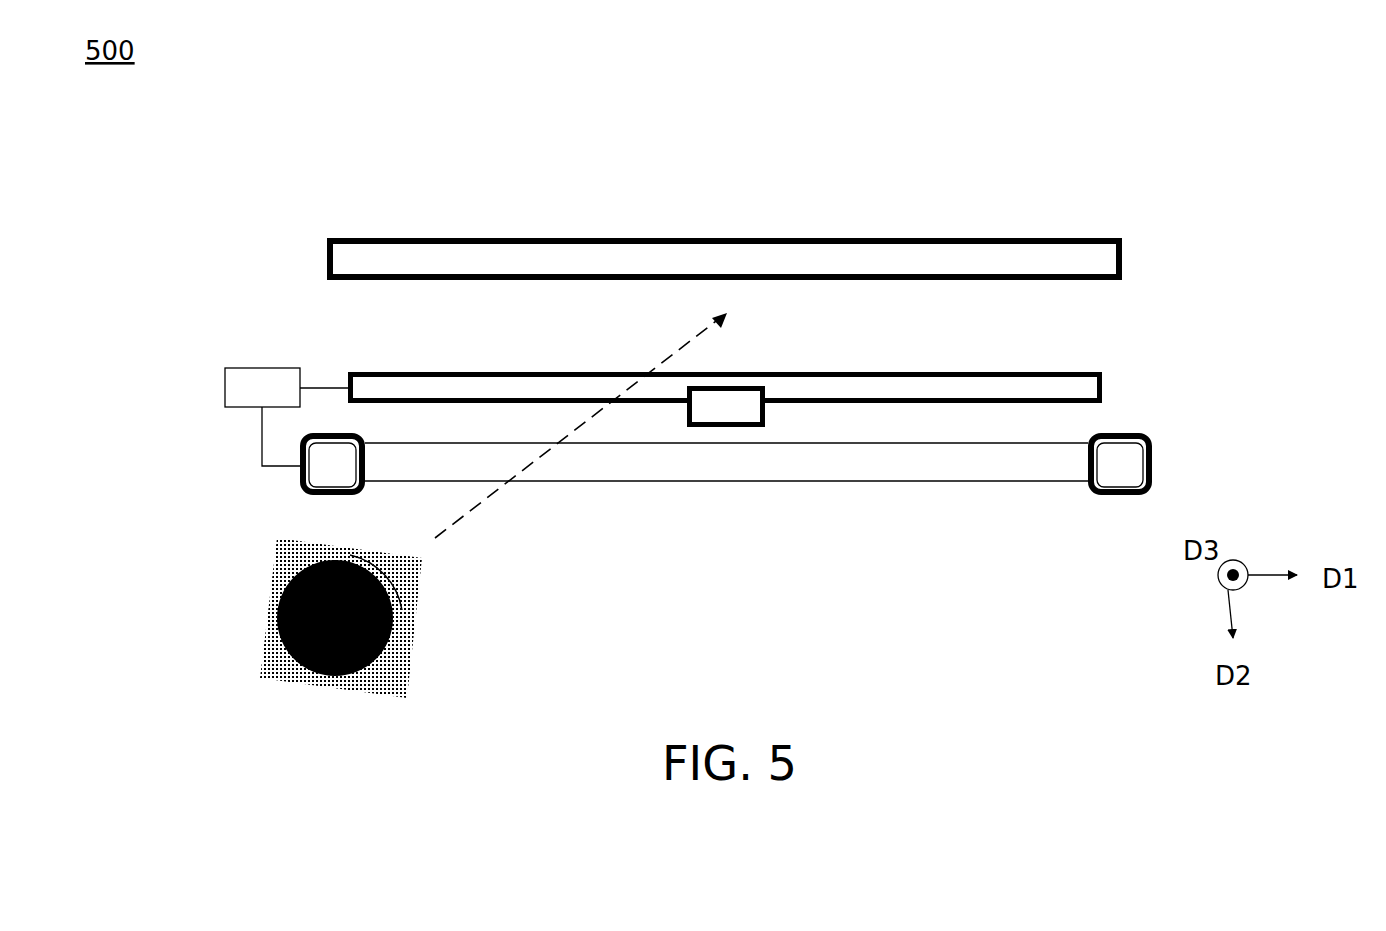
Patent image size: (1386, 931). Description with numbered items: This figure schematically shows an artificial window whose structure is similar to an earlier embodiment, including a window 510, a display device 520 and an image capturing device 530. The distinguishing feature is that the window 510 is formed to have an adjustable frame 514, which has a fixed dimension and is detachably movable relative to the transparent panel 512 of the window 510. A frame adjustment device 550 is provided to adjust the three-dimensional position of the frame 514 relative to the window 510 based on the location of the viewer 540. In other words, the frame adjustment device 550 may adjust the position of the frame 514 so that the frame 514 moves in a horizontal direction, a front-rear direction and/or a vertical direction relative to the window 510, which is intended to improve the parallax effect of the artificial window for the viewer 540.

The window 510 is at (913, 533).
The transparent panel 512 is at (950, 385).
The adjustable frame 514 is at (1025, 482).
The display device 520 is at (1060, 237).
The image capturing device 530 is at (748, 392).
The viewer 540 is at (297, 565).
The frame adjustment device 550 is at (286, 417).